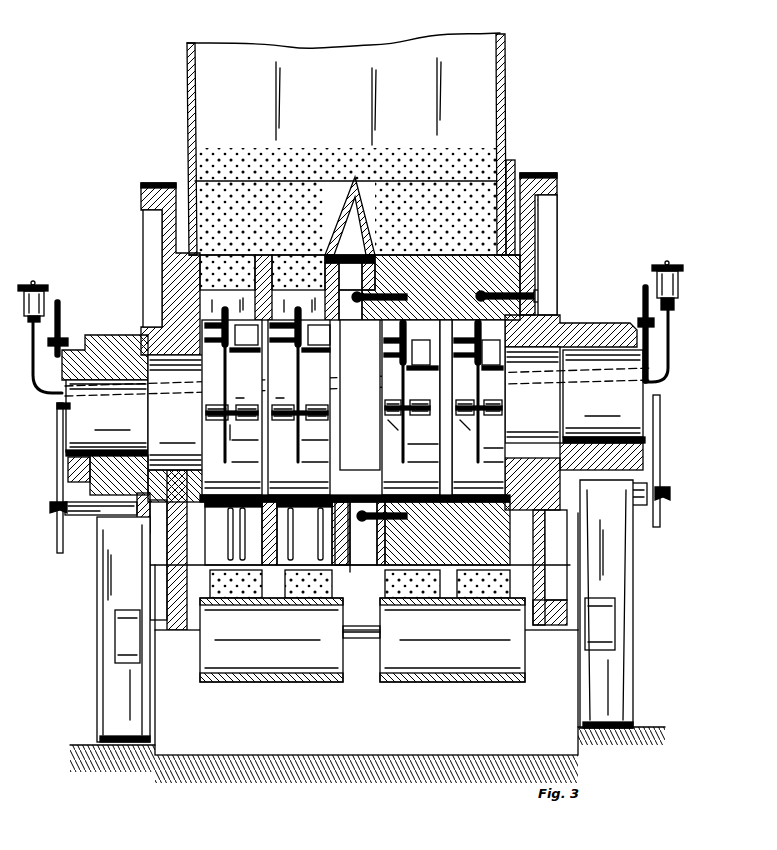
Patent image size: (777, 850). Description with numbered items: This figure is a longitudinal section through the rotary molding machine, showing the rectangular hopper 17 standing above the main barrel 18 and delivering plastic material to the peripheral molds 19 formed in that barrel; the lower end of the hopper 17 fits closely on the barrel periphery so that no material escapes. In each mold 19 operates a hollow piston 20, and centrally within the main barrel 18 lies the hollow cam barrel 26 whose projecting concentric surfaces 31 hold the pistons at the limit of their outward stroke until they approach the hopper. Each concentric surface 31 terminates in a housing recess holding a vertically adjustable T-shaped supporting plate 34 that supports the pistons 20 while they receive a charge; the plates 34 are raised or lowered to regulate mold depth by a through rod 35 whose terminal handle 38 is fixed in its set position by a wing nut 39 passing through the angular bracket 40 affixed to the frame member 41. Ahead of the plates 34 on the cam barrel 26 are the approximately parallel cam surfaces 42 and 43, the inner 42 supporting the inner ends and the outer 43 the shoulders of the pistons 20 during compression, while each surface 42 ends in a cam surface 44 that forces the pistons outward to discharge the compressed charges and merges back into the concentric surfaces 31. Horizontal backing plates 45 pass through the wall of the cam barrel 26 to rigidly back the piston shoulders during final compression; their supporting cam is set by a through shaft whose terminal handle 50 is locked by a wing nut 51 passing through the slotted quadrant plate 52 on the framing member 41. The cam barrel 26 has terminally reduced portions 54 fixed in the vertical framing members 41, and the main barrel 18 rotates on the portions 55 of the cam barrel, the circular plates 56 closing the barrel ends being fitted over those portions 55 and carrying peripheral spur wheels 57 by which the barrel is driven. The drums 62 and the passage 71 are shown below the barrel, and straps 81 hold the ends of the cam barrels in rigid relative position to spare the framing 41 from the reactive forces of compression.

The hopper 17 is at (353, 144).
The main barrel 18 is at (440, 262).
The molds 19 is at (285, 262).
The piston 20 is at (343, 431).
The cam barrel 26 is at (357, 442).
The concentric surfaces 31 is at (355, 411).
The T-shaped supporting plates 34 is at (354, 346).
The through rod 35 is at (347, 386).
The handle 38 is at (60, 302).
The wing nut 39 is at (45, 343).
The angular bracket 40 is at (66, 340).
The frame member 41 is at (365, 611).
The inner cam surface 42 is at (233, 435).
The outer cam surface 43 is at (510, 424).
The cam surface 44 is at (367, 454).
The backing plates 45 is at (353, 418).
The handle 50 is at (57, 458).
The wing nut 51 is at (50, 506).
The slotted quadrant plate 52 is at (80, 515).
The reduced portions 54 is at (355, 403).
The portions 55 is at (354, 408).
The circular plates 56 is at (355, 412).
The spur wheels 57 is at (141, 191).
The drums 62 is at (285, 603).
The lower core passage 71 is at (350, 566).
The straps 81 is at (68, 470).